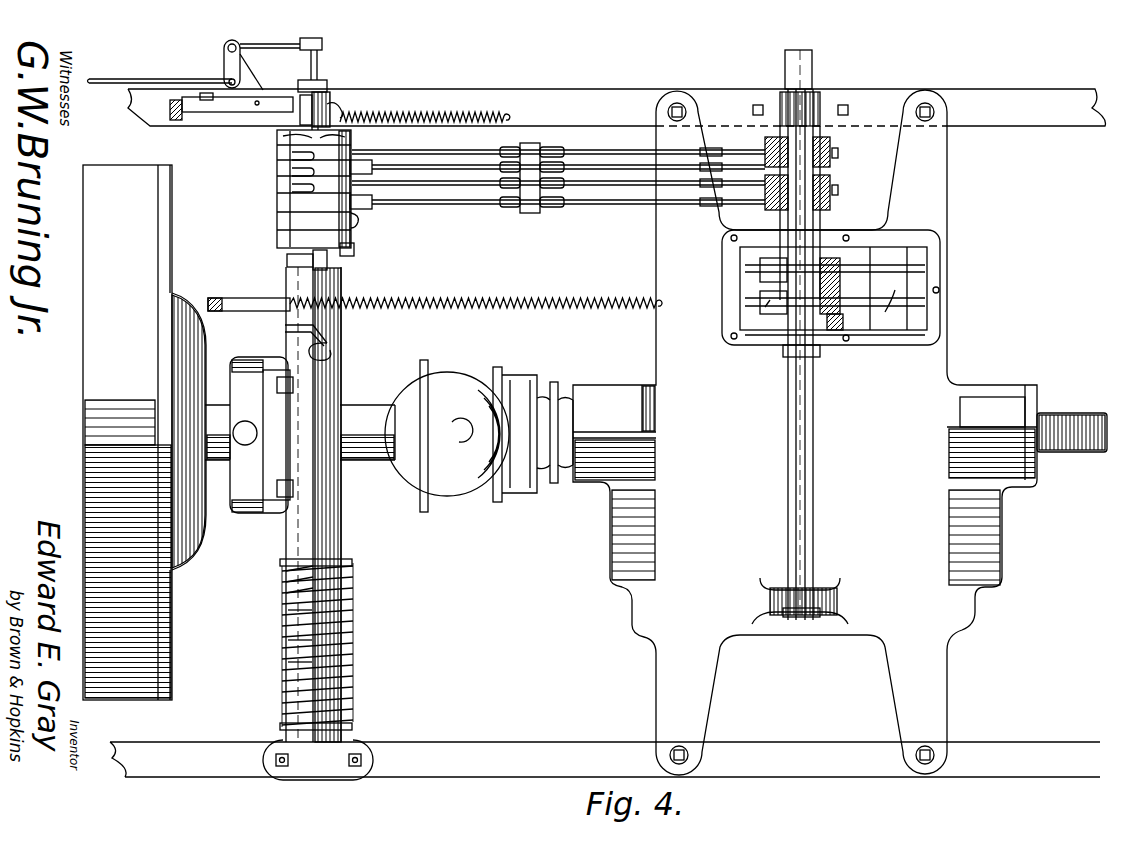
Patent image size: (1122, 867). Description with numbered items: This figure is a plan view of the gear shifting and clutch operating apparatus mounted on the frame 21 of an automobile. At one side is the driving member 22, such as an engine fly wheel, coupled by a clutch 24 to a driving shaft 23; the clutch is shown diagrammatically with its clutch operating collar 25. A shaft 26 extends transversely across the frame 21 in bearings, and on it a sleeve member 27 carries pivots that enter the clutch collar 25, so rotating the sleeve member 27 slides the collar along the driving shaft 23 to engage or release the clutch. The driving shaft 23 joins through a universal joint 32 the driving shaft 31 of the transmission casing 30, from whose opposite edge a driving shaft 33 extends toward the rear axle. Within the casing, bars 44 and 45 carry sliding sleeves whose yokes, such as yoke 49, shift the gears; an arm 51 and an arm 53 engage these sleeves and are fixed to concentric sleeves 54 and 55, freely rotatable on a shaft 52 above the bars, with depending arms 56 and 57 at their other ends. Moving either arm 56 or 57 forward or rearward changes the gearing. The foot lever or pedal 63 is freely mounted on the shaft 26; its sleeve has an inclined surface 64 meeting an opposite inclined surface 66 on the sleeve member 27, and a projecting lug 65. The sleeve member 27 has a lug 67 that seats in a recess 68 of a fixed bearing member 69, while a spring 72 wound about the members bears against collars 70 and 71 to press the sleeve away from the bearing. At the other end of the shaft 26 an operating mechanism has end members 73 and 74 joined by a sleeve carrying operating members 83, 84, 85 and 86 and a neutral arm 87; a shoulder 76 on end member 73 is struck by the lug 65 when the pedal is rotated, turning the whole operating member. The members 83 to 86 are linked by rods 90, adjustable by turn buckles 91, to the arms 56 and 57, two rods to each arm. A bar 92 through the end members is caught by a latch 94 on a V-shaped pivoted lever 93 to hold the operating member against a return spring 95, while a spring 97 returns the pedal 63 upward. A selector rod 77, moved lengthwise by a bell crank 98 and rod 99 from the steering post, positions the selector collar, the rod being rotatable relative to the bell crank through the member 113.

The frame 21 is at (560, 97).
The driving member 22 is at (102, 360).
The driving shaft 23 is at (379, 463).
The clutch 24 is at (196, 548).
The clutch operating collar 25 is at (247, 514).
The shaft 26 is at (354, 638).
The sleeve member 27 is at (342, 524).
The transmission casing 30 is at (702, 603).
The driving shaft 31 is at (560, 481).
The universal joint 32 is at (478, 490).
The driving shaft 33 is at (1075, 428).
The bar 44 is at (892, 312).
The bar 45 is at (897, 250).
The yoke 49 is at (862, 288).
The arm 51 is at (764, 310).
The shaft 52 is at (810, 405).
The arm 53 is at (760, 270).
The sleeve 54 is at (783, 287).
The sleeve 55 is at (780, 216).
The depending arm 56 is at (830, 202).
The depending arm 57 is at (832, 163).
The foot lever or pedal 63 is at (250, 298).
The inclined surface 64 is at (323, 330).
The projecting lug 65 is at (322, 264).
The inclined surface 66 is at (331, 359).
The lug 67 is at (283, 614).
The recess 68 is at (283, 646).
The fixed bearing member 69 is at (300, 667).
The collar 70 is at (347, 560).
The collar 71 is at (355, 727).
The spring 72 is at (353, 592).
The end member 73 is at (281, 240).
The end member 74 is at (282, 140).
The shoulder 76 is at (288, 260).
The selector rod 77 is at (318, 66).
The operating member 83 is at (288, 156).
The operating member 84 is at (288, 172).
The operating member 85 is at (290, 188).
The operating member 86 is at (356, 222).
The neutral arm 87 is at (348, 250).
The rods 90 is at (472, 190).
The turn buckles 91 is at (532, 206).
The bar 92 is at (331, 108).
The pivoted lever 93 is at (178, 122).
The latch 94 is at (285, 105).
The spring 95 is at (448, 118).
The spring 97 is at (510, 309).
The bell crank 98 is at (225, 60).
The rod 99 is at (126, 80).
The member 113 is at (323, 44).